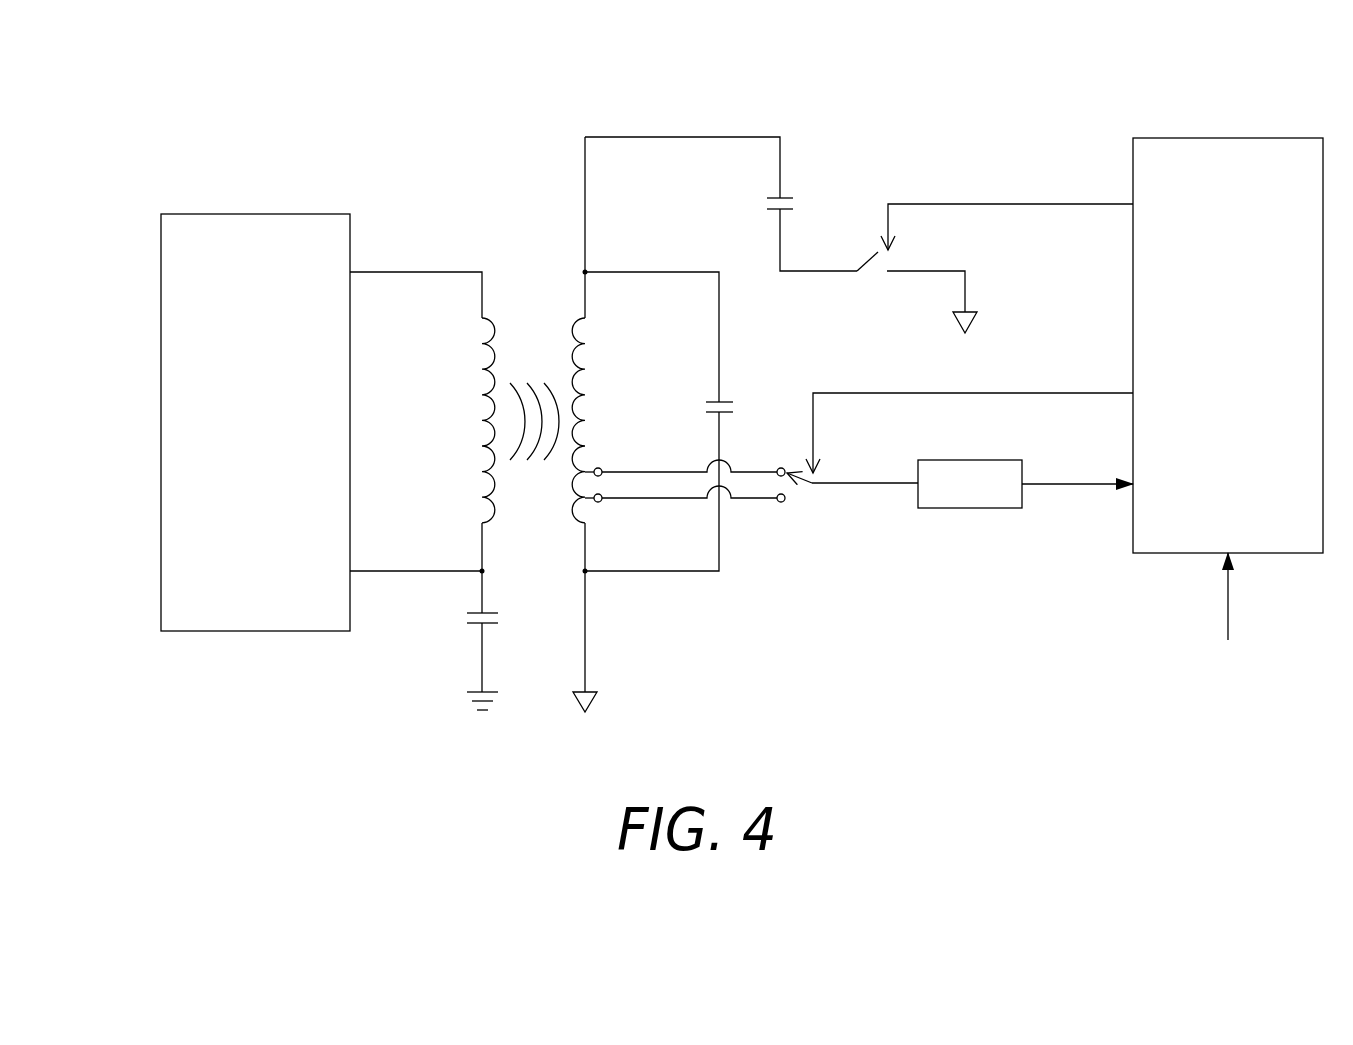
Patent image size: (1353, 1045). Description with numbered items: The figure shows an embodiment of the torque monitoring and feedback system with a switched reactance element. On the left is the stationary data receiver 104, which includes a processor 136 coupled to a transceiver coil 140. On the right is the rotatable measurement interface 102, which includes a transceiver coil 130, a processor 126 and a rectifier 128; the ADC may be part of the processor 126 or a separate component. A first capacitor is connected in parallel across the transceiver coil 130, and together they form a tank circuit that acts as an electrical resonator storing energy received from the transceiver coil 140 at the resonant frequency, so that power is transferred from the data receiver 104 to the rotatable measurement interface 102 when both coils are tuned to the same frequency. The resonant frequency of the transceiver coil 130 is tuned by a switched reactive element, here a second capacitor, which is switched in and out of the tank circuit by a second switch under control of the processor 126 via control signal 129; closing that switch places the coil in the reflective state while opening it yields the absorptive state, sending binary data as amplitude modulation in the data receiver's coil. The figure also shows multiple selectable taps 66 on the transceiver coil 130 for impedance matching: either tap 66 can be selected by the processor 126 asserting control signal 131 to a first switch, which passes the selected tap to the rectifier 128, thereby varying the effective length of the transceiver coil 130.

The rotatable measurement interface 102 is at (968, 92).
The data receiver 104 is at (212, 153).
The processor 126 is at (1243, 403).
The rectifier 128 is at (987, 508).
The control signal 129 is at (1013, 203).
The transceiver coil 130 is at (583, 345).
The control signal 131 is at (1013, 393).
The processor 136 is at (270, 478).
The transceiver coil 140 is at (483, 370).
The selectable taps 66 is at (608, 482).